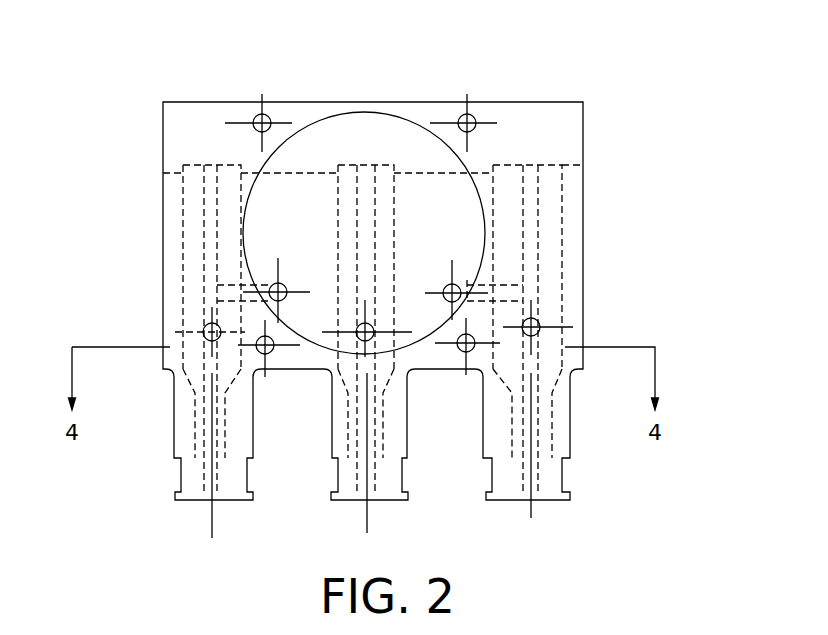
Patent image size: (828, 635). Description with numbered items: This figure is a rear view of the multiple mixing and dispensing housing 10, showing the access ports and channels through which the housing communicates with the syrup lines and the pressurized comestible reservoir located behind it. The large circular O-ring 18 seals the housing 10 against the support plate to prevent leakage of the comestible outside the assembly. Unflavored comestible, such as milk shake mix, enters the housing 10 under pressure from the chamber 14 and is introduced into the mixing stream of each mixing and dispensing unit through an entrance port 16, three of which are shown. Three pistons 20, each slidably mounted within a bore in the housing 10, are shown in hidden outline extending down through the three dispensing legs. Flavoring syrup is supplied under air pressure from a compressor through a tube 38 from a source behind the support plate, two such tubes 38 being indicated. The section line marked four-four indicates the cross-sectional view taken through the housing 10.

The multiple mixing and dispensing housing 10 is at (616, 100).
The chamber 14 is at (297, 204).
The entrance port 16 is at (287, 288).
The O-ring 18 is at (414, 123).
The piston 20 is at (195, 183).
The tube 38 is at (201, 325).